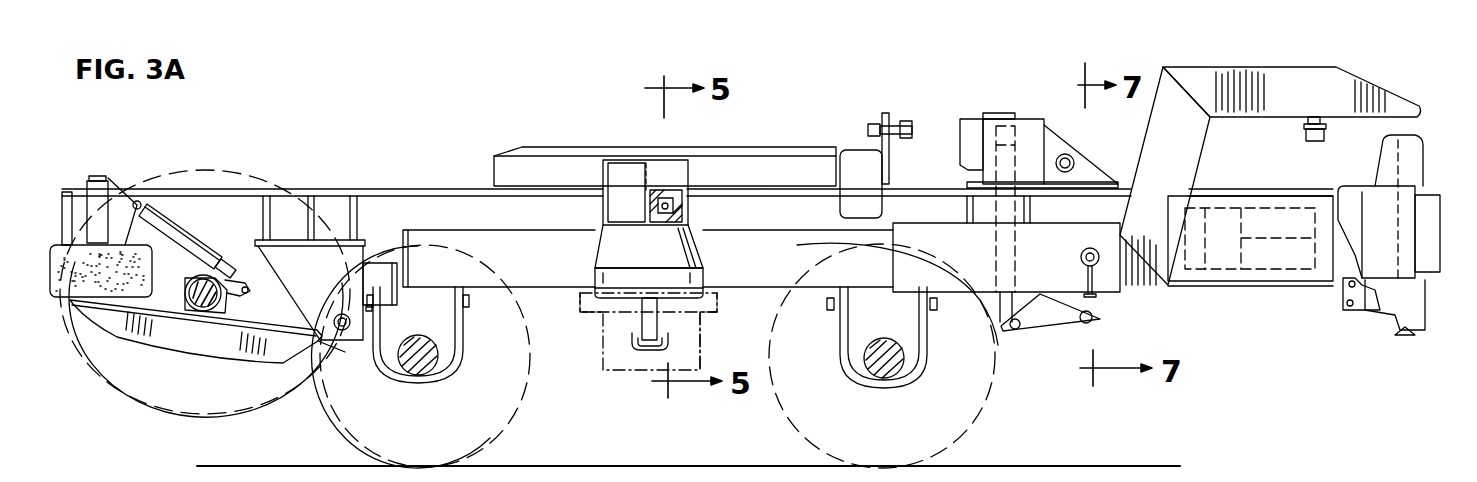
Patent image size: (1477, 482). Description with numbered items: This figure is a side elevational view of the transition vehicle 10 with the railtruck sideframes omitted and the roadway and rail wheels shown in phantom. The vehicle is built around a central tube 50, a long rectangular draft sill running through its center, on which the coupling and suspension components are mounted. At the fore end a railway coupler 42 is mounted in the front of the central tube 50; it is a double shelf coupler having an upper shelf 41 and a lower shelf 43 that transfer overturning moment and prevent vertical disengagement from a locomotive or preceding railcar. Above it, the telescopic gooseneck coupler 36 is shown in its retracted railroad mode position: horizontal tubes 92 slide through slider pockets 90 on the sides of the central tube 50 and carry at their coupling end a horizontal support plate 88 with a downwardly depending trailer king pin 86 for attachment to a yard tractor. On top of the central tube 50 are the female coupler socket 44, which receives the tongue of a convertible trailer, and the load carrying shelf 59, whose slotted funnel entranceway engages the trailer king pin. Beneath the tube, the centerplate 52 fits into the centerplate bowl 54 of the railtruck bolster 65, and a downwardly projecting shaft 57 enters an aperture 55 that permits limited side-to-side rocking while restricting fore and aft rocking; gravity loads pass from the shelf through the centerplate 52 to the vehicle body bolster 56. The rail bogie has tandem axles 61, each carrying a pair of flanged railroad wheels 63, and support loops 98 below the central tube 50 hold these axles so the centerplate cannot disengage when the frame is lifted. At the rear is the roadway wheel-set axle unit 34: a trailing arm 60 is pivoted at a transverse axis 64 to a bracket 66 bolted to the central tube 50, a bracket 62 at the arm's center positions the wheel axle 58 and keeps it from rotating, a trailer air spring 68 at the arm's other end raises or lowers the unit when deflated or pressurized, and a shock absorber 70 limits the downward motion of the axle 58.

The transition vehicle 10 is at (564, 108).
The roadway wheel-set axle unit 34 is at (147, 409).
The gooseneck coupler 36 is at (1230, 52).
The upper shelf 41 is at (1416, 132).
The railway coupler 42 is at (1342, 316).
The lower shelf 43 is at (1410, 327).
The female coupler socket 44 is at (1036, 102).
The central tube 50 is at (420, 207).
The centerplate 52 is at (615, 302).
The centerplate bowl 54 is at (596, 272).
The aperture 55 is at (643, 349).
The vehicle body bolster 56 is at (694, 240).
The shaft 57 is at (645, 321).
The wheel axle 58 is at (204, 280).
The load carrying shelf 59 is at (787, 161).
The trailing arm 60 is at (283, 348).
The tandem axles 61 is at (415, 373).
The bracket 62 is at (187, 311).
The flanged railroad wheels 63 is at (515, 414).
The pivot 64 is at (345, 352).
The railtruck bolster 65 is at (699, 360).
The bracket 66 is at (306, 275).
The trailer air spring 68 is at (69, 296).
The shock absorber 70 is at (176, 200).
The trailer king pin 86 is at (1297, 132).
The support plate 88 is at (1351, 83).
The slider pockets 90 is at (493, 243).
The horizontal tubes 92 is at (1141, 273).
The support loops 98 is at (462, 382).